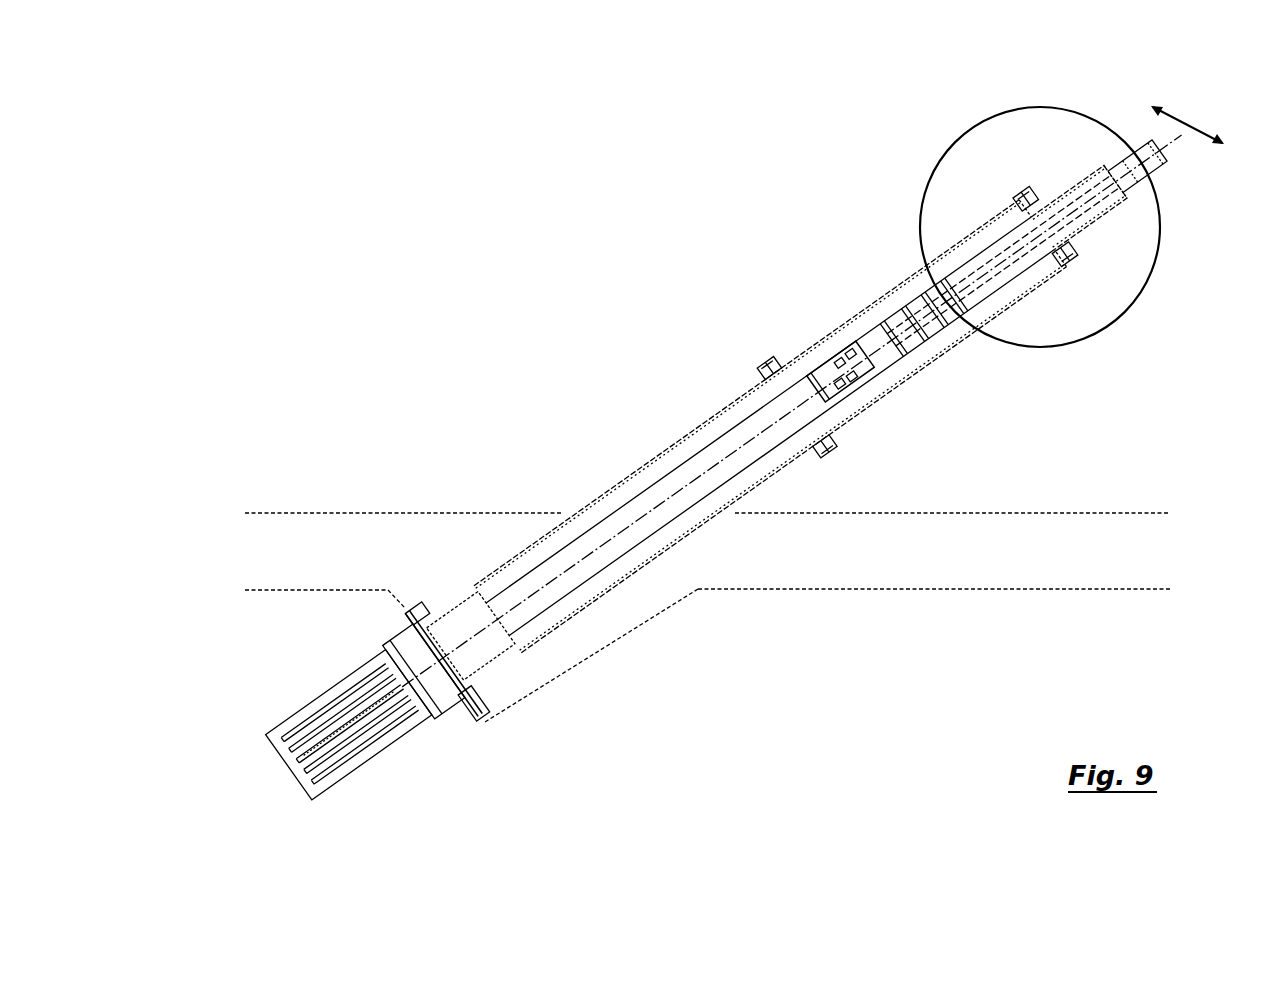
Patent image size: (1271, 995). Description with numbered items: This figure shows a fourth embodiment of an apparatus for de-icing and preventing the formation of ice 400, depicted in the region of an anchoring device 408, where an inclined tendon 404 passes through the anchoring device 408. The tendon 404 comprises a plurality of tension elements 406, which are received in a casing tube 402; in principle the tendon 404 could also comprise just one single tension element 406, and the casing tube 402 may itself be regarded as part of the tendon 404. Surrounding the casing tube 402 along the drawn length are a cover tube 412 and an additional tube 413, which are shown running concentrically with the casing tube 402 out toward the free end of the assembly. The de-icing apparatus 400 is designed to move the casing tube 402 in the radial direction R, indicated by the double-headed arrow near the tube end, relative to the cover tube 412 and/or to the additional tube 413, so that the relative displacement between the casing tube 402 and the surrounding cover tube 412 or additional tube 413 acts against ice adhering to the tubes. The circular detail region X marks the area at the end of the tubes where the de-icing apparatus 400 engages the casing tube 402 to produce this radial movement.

The apparatus for de-icing and preventing the formation of ice 400 is at (690, 233).
The casing tube 402 is at (1157, 160).
The tendon 404 is at (579, 579).
The tension elements 406 is at (352, 712).
The anchoring device 408 is at (410, 410).
The cover tube 412 is at (670, 450).
The additional tube 413 is at (936, 360).
The detail region X is at (1138, 295).
The radial direction R is at (1187, 121).